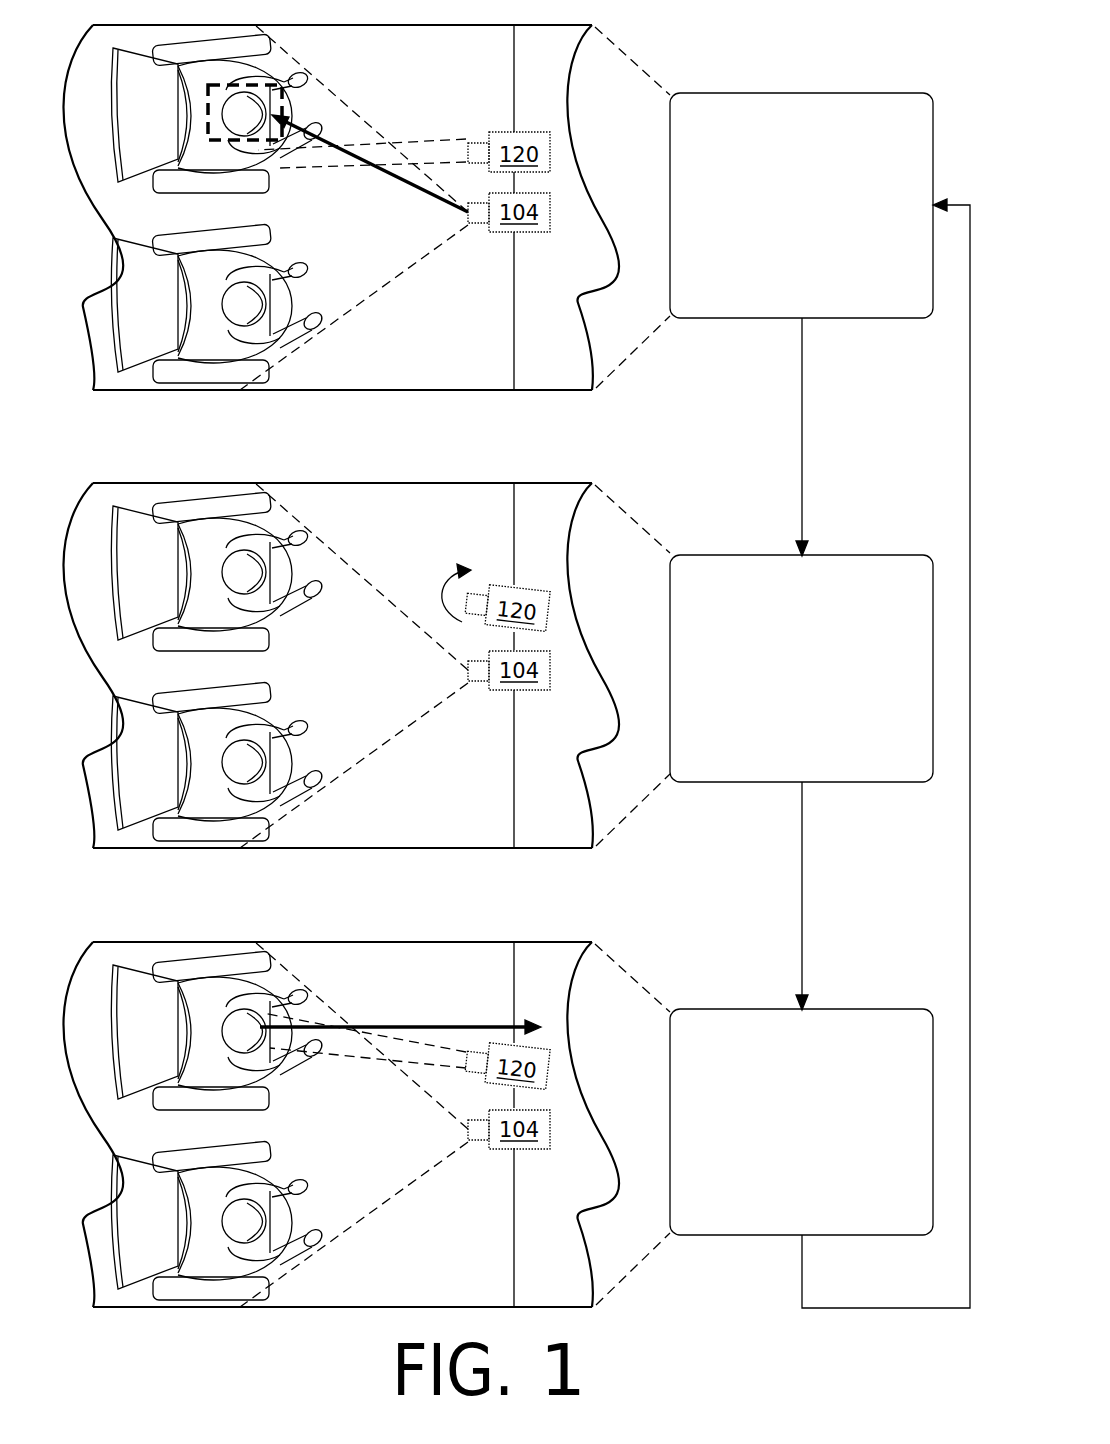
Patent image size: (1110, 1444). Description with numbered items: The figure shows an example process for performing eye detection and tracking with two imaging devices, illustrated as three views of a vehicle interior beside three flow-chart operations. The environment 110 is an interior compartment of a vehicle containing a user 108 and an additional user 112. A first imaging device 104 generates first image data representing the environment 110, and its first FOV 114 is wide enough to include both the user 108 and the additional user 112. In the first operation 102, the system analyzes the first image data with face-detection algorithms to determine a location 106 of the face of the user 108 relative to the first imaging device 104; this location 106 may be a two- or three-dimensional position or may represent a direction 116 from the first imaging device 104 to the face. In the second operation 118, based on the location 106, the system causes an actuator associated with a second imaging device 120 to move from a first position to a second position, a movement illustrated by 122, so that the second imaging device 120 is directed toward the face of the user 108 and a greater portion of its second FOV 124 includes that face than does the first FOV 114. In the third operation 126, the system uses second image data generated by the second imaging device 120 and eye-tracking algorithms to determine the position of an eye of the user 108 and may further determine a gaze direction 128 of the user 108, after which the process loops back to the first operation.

The operation of determining a location of a face 102 is at (770, 93).
The first imaging device 104 is at (509, 671).
The location of a face of a user 106 is at (283, 110).
The user 108 is at (233, 572).
The environment 110 is at (341, 666).
The additional user 112 is at (233, 762).
The first FOV 114 is at (354, 666).
The direction 116 is at (395, 178).
The operation of causing movement of an actuator 118 is at (770, 556).
The second imaging device 120 is at (404, 610).
The movement of the actuator from a first position to a second position 122 is at (427, 584).
The second FOV 124 is at (364, 1056).
The operation of determining a position of an eye 126 is at (770, 1009).
The gaze direction 128 is at (400, 1015).